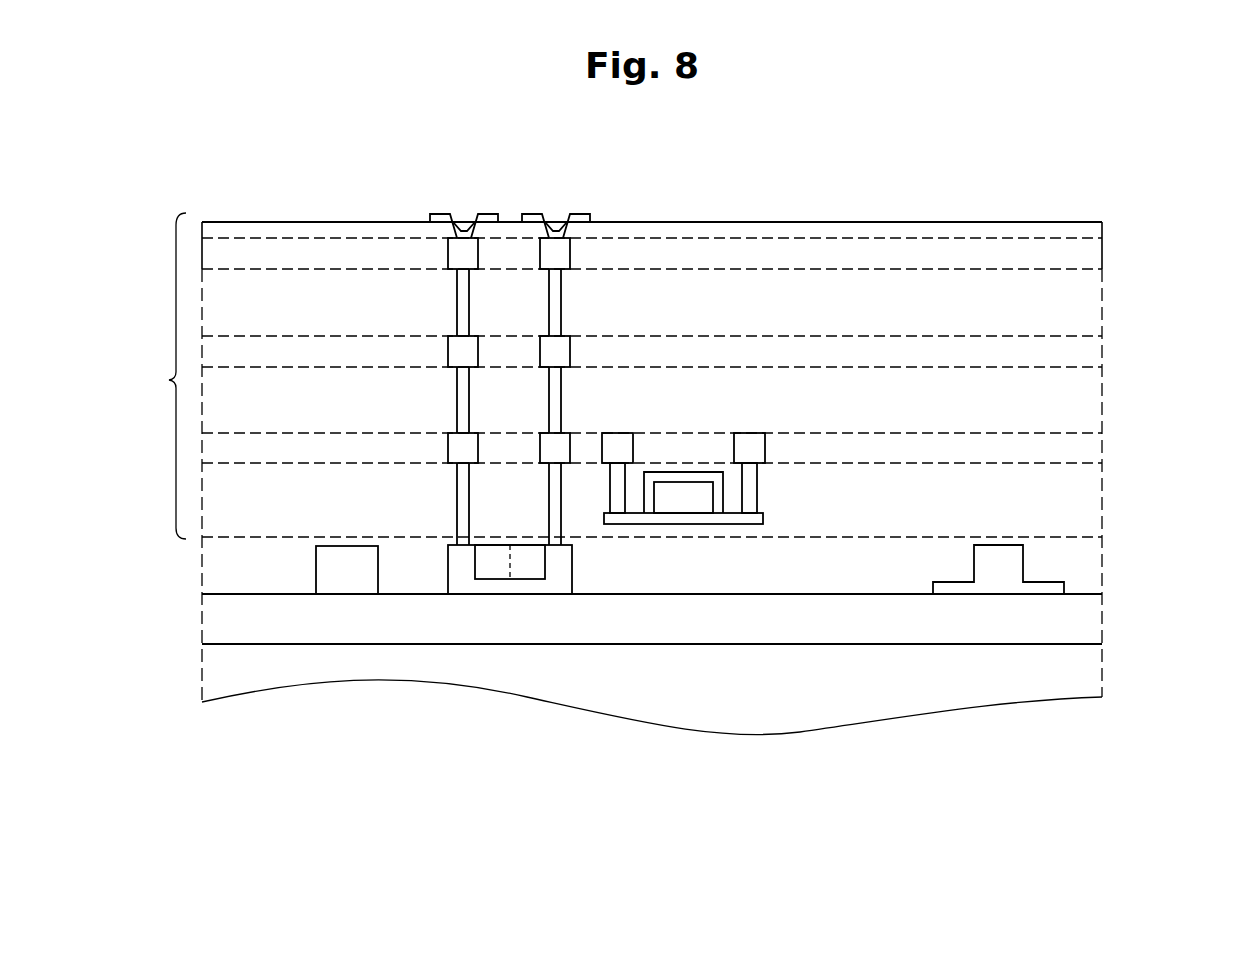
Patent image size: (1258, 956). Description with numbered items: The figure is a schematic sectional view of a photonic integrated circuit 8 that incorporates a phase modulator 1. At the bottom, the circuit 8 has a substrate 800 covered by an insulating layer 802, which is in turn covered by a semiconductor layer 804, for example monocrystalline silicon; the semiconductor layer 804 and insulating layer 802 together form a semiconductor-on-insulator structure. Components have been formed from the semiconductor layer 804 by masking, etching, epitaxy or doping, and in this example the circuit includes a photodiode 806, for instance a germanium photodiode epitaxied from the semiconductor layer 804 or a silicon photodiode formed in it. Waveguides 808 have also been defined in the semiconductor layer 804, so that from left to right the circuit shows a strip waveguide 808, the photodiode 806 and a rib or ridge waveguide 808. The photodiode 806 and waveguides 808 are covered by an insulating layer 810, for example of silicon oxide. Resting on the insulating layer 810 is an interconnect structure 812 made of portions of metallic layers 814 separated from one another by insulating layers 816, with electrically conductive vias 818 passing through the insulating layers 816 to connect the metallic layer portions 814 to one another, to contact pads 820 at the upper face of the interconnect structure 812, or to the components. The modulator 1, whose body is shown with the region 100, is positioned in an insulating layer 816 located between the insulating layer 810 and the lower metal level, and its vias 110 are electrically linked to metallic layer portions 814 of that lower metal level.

The photonic integrated circuit 8 is at (1200, 209).
The modulator 1 is at (780, 520).
The channel layer 100 is at (703, 504).
The vias 110 is at (757, 492).
The substrate 800 is at (1086, 676).
The insulating layer 802 is at (1088, 626).
The semiconductor layer 804 is at (1038, 567).
The photodiode 806 is at (523, 600).
The waveguides 808 is at (351, 600).
The insulating layer 810 is at (218, 573).
The interconnect structure 812 is at (156, 376).
The metallic layer portions 814 is at (455, 254).
The insulating layers 816 is at (1092, 228).
The electrically conductive vias 818 is at (457, 297).
The contact pads 820 is at (483, 217).